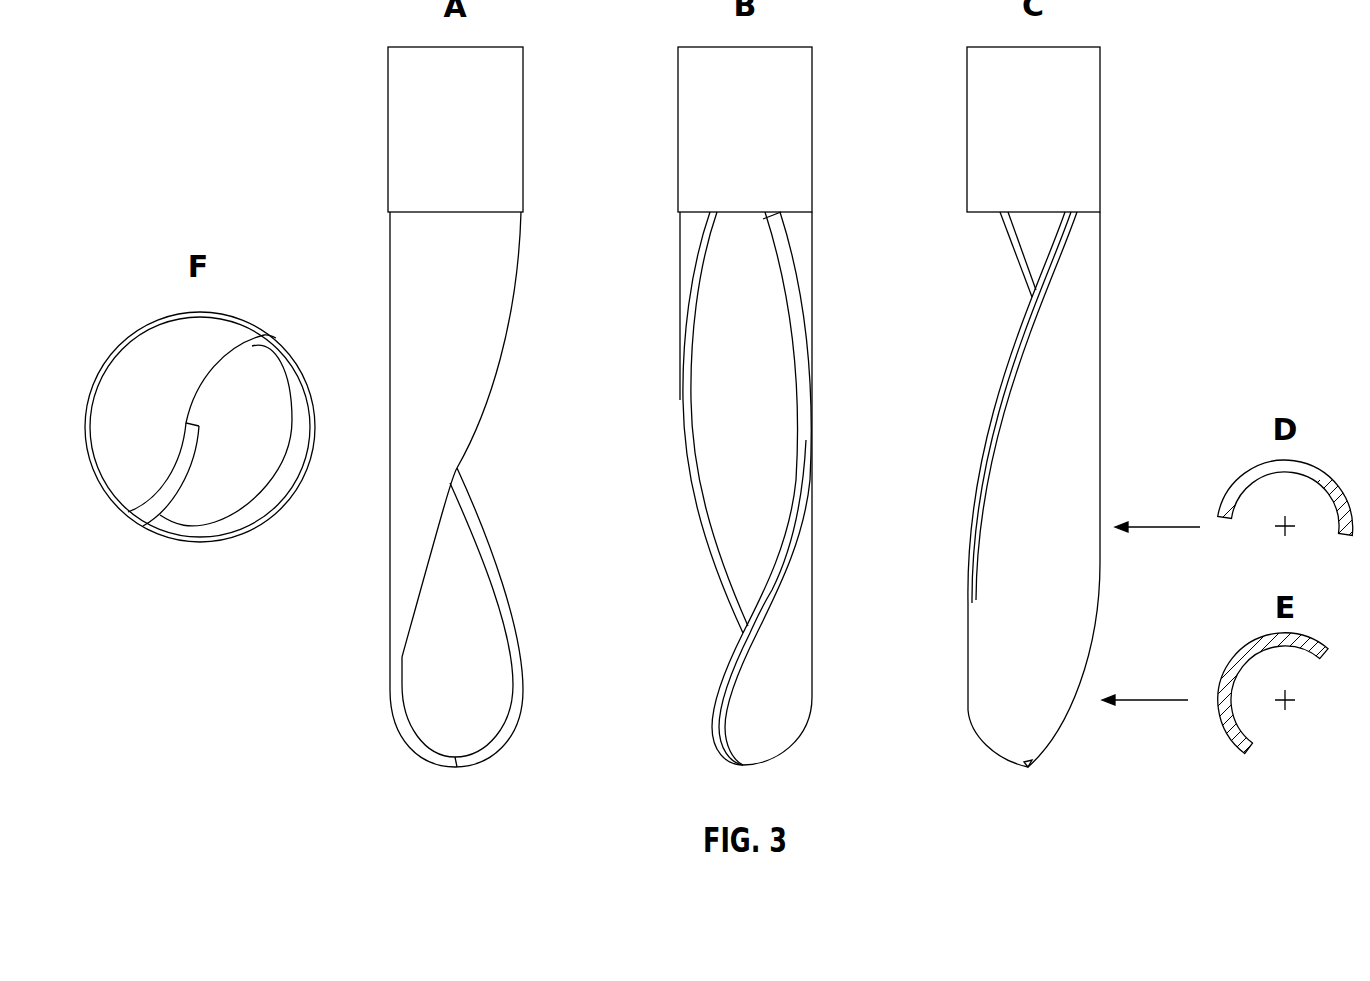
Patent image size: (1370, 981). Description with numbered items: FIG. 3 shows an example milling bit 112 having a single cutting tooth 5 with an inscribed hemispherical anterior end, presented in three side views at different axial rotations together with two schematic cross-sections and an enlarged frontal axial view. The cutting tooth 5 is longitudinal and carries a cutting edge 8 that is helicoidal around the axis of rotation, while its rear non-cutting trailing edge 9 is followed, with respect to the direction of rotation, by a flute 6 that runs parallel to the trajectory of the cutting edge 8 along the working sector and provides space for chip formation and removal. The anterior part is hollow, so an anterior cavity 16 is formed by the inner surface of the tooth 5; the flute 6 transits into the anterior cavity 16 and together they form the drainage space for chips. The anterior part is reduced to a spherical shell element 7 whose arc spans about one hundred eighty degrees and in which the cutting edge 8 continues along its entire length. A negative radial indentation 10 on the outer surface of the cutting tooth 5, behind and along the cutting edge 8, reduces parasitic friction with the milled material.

The milling bit 112 is at (343, 83).
The anterior cavity 16 is at (440, 691).
The trailing edge 9 is at (678, 393).
The flute 6 is at (757, 377).
The cutting edge 8 is at (712, 720).
The spherical shell element 7 is at (792, 690).
The negative radial indentation 10 is at (1006, 393).
The cutting tooth 5 is at (1077, 497).